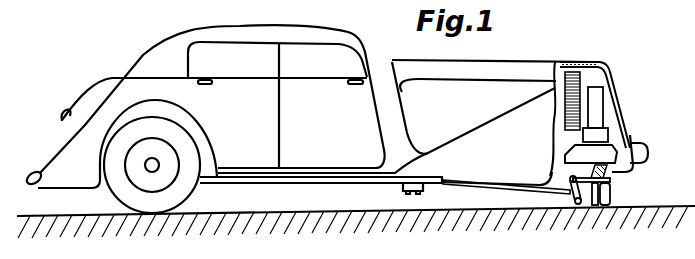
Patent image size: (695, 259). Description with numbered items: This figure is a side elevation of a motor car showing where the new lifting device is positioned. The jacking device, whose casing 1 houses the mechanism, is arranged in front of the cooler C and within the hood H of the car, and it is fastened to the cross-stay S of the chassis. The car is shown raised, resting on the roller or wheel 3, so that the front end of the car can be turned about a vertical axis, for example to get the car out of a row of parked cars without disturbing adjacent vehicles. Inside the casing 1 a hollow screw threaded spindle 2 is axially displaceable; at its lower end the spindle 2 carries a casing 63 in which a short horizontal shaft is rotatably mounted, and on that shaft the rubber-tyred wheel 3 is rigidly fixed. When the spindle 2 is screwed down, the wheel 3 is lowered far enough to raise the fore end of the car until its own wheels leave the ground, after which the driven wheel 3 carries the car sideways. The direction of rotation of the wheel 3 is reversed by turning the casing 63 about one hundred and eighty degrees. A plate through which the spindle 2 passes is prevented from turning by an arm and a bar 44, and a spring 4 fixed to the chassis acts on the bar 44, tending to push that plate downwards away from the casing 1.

The cooler C is at (577, 72).
The hood H is at (608, 73).
The cross-stay S is at (560, 159).
The casing 1 is at (608, 138).
The hollow screw threaded spindle 2 is at (612, 173).
The wheel 3 is at (605, 205).
The spring 4 is at (497, 184).
The bar 44 is at (567, 195).
The casing 63 is at (592, 195).